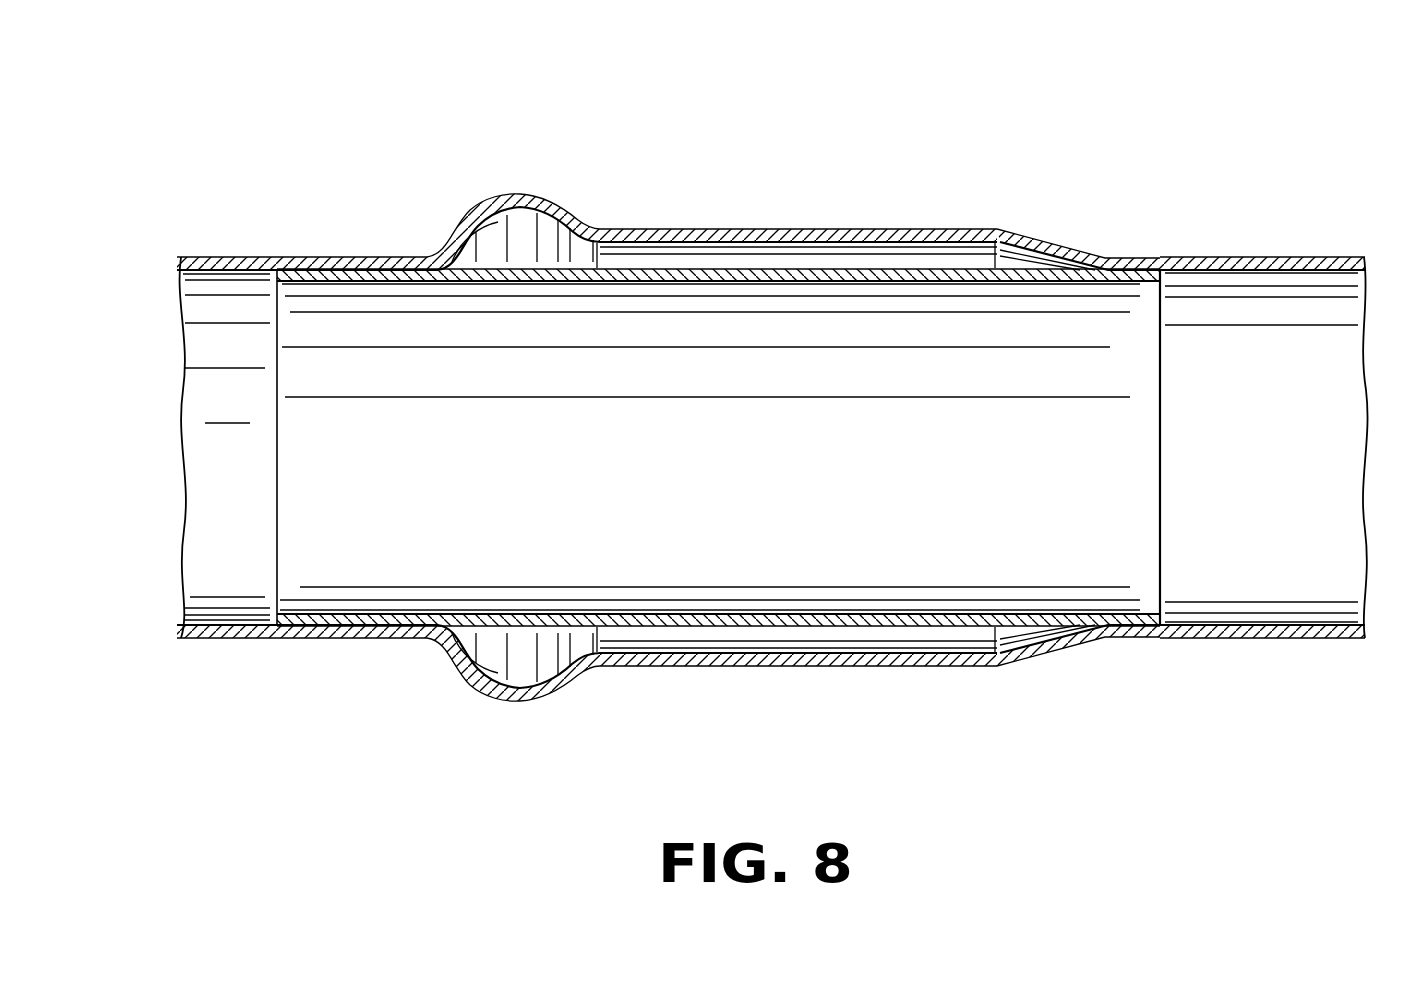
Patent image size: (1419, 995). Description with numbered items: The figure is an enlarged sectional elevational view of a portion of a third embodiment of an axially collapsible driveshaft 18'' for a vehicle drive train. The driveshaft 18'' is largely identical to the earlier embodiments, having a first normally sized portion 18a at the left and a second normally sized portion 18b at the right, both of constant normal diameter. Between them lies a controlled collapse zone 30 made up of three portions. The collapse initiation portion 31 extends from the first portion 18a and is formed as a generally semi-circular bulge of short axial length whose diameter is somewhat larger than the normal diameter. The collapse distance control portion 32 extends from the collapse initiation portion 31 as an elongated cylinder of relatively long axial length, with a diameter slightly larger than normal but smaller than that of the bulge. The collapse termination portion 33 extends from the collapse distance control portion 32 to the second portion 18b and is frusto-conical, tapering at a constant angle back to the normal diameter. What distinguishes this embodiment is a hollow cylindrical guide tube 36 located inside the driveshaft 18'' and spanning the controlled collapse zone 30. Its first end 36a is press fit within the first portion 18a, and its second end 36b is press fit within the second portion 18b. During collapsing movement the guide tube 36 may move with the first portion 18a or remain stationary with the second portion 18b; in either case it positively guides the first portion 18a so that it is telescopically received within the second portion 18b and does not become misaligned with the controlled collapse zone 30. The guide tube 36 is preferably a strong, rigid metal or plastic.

The axially collapsible driveshaft 18'' is at (738, 423).
The first normally sized portion 18a is at (233, 262).
The second normally sized portion 18b is at (1306, 262).
The controlled collapse zone 30 is at (1117, 723).
The collapse initiation portion 31 is at (582, 133).
The collapse distance control portion 32 is at (985, 133).
The collapse termination portion 33 is at (1110, 133).
The guide tube 36 is at (1172, 460).
The first end of guide tube 36a is at (318, 277).
The second end of guide tube 36b is at (1090, 283).